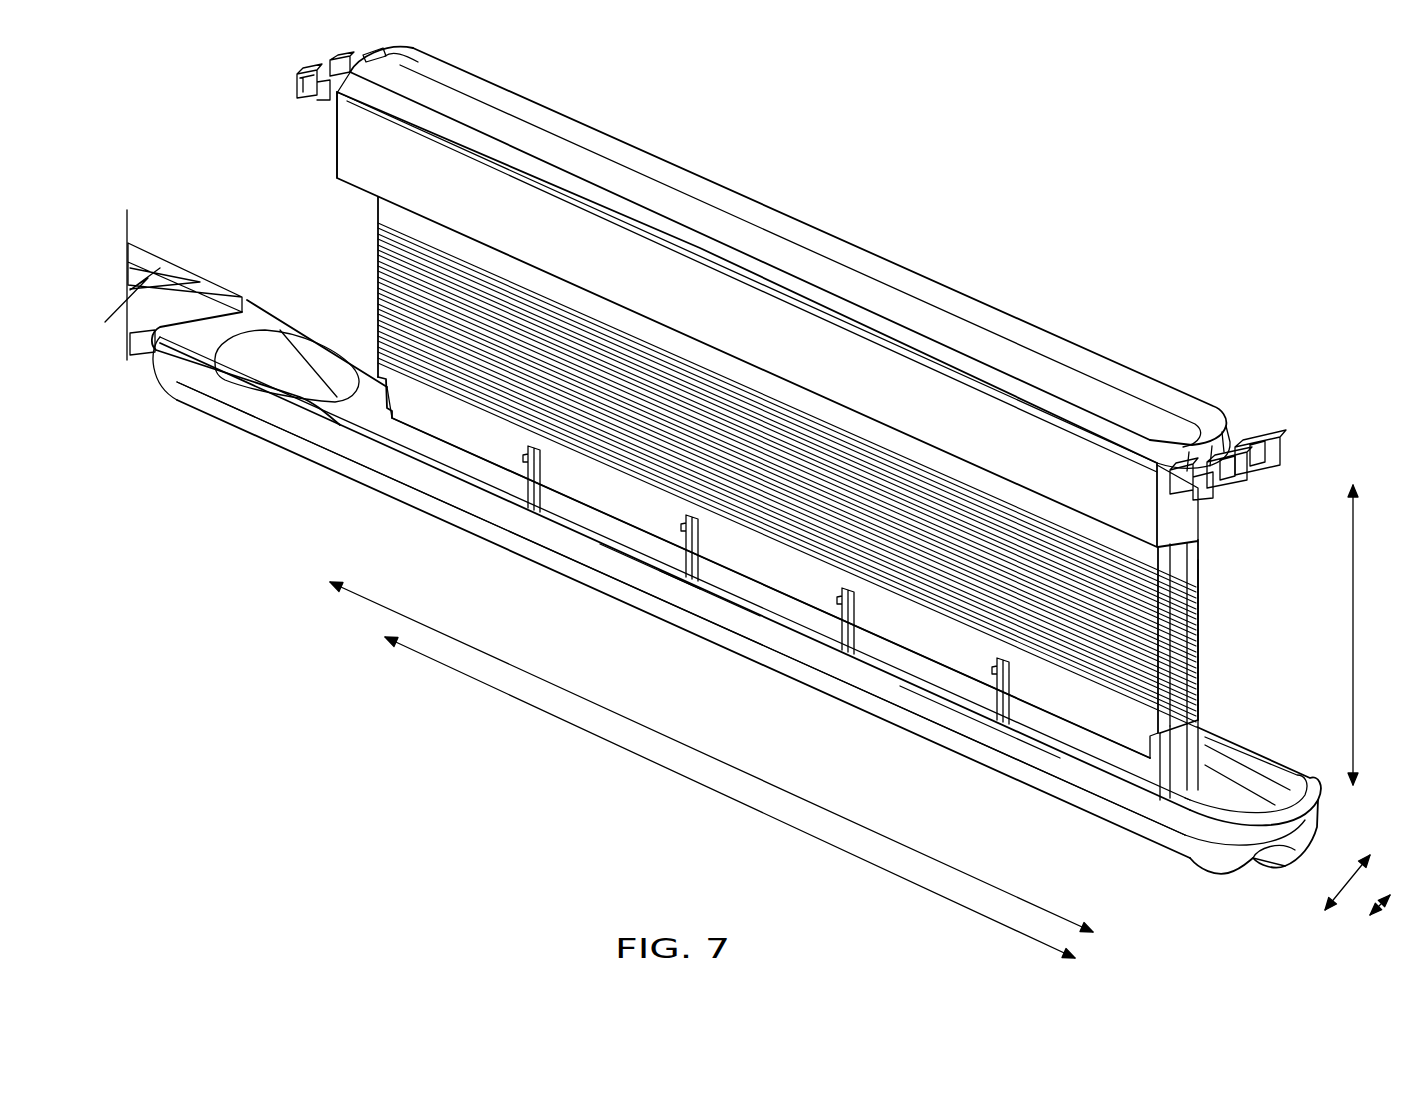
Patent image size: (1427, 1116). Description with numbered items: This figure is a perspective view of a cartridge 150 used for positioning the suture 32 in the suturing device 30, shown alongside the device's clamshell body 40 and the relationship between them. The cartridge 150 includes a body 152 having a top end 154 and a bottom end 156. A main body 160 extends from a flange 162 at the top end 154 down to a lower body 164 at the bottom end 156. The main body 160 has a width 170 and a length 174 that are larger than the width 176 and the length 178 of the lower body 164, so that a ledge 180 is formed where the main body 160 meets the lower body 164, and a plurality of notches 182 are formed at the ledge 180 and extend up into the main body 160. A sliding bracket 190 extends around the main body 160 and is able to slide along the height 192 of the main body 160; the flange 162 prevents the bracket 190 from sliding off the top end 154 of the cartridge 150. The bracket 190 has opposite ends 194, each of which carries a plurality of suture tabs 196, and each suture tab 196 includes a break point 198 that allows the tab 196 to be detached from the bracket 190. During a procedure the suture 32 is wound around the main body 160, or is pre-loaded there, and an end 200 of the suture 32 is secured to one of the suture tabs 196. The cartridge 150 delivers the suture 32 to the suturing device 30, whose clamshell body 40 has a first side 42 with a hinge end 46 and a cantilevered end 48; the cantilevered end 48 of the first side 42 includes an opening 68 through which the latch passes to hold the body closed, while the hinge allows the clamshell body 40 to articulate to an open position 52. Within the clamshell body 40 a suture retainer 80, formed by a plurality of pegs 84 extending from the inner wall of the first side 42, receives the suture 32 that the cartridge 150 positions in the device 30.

The suturing device 30 is at (198, 382).
The suture 32 is at (1200, 630).
The clamshell body 40 is at (266, 316).
The first side 42 is at (334, 455).
The hinge end 46 is at (172, 368).
The cantilevered end 48 is at (1218, 840).
The open position 52 is at (708, 672).
The opening 68 is at (1270, 882).
The suture retainer 80 is at (702, 578).
The pegs 84 is at (1002, 690).
The cartridge 150 is at (380, 207).
The body 152 is at (362, 352).
The top end 154 is at (752, 98).
The bottom end 156 is at (470, 474).
The main body 160 is at (1205, 700).
The flange 162 is at (438, 63).
The lower body 164 is at (409, 440).
The width 170 is at (1353, 878).
The length 174 is at (362, 600).
The width 176 is at (1373, 918).
The length 178 is at (446, 682).
The ledge 180 is at (946, 660).
The notches 182 is at (535, 497).
The sliding bracket 190 is at (763, 303).
The height 192 is at (1356, 606).
The opposite ends 194 is at (335, 146).
The suture tabs 196 is at (300, 78).
The break point 198 is at (333, 98).
The end 200 is at (1216, 548).